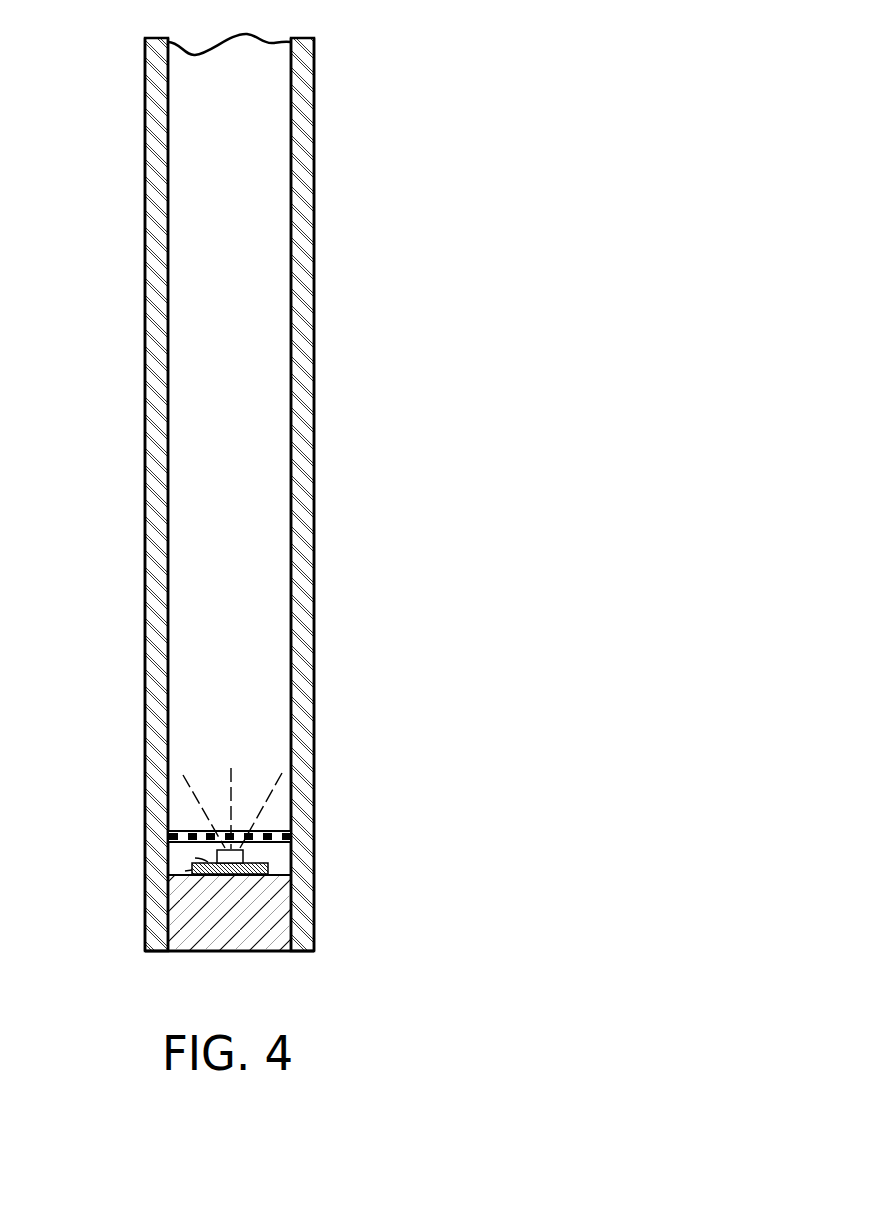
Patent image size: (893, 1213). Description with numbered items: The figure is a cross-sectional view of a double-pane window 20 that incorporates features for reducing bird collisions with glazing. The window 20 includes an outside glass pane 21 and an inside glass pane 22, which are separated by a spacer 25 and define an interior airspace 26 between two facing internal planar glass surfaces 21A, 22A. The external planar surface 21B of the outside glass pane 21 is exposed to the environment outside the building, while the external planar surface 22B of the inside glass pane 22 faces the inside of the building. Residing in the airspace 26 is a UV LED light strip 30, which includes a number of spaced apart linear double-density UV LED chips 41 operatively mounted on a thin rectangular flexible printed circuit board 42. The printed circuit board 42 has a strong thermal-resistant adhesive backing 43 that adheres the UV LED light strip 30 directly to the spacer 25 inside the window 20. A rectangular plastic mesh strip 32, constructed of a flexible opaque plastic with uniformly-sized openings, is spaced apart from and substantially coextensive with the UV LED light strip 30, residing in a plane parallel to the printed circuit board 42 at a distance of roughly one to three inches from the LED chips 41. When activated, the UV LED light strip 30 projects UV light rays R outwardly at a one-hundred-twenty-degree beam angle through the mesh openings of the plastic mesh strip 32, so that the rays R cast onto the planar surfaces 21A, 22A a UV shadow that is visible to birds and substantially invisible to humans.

The double-pane window 20 is at (485, 157).
The outside glass pane 21 is at (315, 110).
The internal planar glass surface of outside glass pane 21A is at (290, 392).
The external planar surface of outside glass pane 21B is at (315, 255).
The inside glass pane 22 is at (155, 118).
The internal planar glass surface of inside glass pane 22A is at (168, 215).
The external planar surface of inside glass pane 22B is at (145, 315).
The spacer 25 is at (270, 905).
The interior airspace 26 is at (255, 478).
The UV LED light strip 30 is at (270, 866).
The plastic mesh strip 32 is at (190, 832).
The UV LED chip 41 is at (243, 858).
The flexible printed circuit board 42 is at (208, 862).
The thermal-resistant adhesive backing 43 is at (192, 870).
The UV light rays R is at (255, 817).